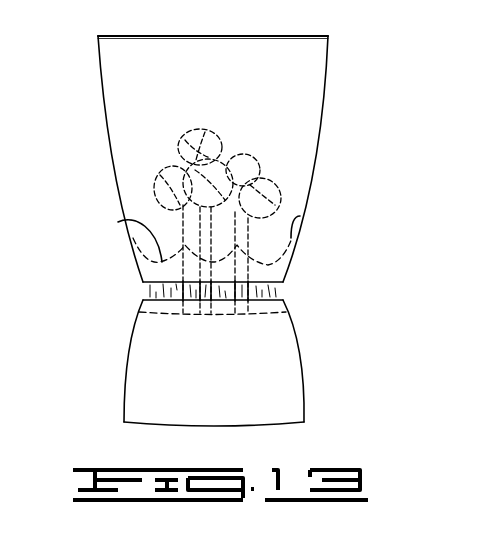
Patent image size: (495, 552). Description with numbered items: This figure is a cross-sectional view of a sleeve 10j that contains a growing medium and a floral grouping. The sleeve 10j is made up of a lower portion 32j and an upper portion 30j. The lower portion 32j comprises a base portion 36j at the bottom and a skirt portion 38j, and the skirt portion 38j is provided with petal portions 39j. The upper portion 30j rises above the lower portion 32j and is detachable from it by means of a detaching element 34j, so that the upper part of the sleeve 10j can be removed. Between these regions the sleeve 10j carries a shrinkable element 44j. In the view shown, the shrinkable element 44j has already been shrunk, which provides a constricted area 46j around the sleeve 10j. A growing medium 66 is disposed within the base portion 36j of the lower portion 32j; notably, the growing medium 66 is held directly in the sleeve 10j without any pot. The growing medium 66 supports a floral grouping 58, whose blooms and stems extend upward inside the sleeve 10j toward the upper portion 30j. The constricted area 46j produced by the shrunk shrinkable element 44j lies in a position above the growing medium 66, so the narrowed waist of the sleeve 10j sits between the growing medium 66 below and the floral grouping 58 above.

The sleeve 10j is at (340, 178).
The upper portion 30j is at (325, 127).
The lower portion 32j is at (129, 346).
The detaching element 34j is at (118, 222).
The base portion 36j is at (305, 386).
The skirt portion 38j is at (138, 258).
The petal portions 39j is at (300, 216).
The shrinkable element 44j is at (283, 291).
The constricted area 46j is at (150, 293).
The floral grouping 58 is at (181, 229).
The growing medium 66 is at (283, 346).